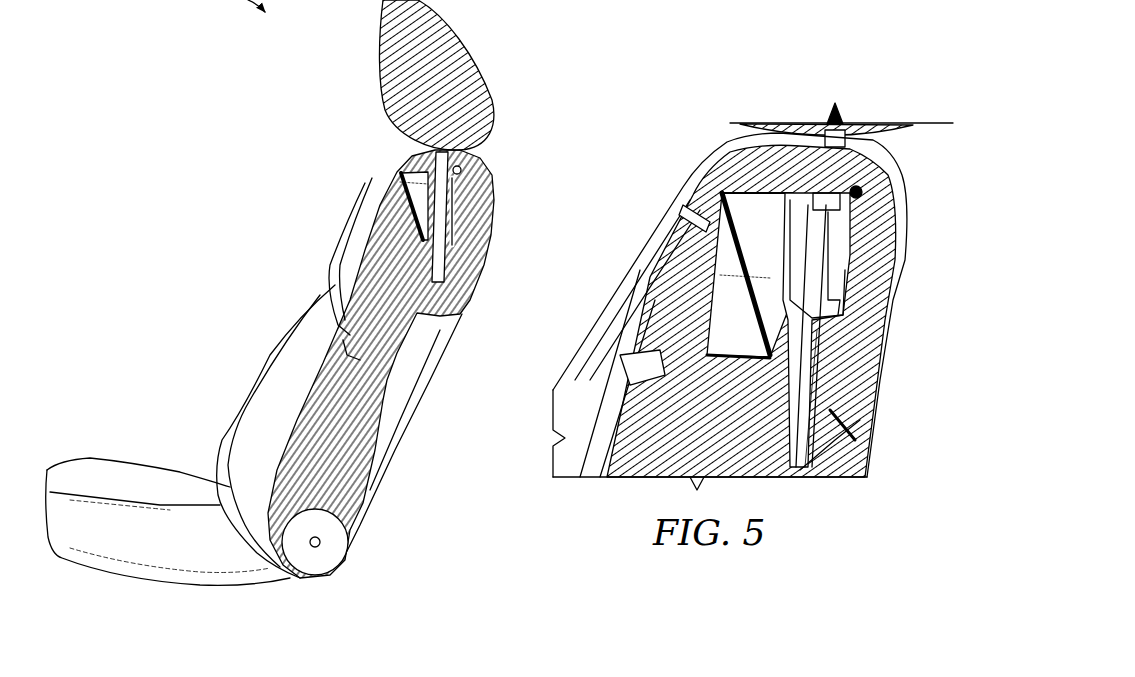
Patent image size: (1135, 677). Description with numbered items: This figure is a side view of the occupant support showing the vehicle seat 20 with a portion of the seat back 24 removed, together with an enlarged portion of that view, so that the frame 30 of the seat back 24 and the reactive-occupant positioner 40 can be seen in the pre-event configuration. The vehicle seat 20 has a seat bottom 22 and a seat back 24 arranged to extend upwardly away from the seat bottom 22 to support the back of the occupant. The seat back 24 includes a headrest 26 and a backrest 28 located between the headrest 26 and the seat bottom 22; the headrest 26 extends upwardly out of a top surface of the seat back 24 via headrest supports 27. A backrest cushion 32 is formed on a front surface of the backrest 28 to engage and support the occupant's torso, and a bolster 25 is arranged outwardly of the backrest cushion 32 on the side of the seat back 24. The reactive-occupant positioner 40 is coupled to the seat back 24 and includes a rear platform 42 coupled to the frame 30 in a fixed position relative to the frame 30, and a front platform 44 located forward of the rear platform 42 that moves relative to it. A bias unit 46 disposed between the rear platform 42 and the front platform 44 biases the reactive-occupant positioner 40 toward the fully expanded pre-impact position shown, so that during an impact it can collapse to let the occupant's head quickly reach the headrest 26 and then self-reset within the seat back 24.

In FIG. 4, the vehicle seat 20 is at (268, 110).
In FIG. 4, the seat bottom 22 is at (70, 480).
In FIG. 4, the seat back 24 is at (470, 276).
In FIG. 5, the seat back 24 is at (900, 282).
In FIG. 4, the bolster 25 is at (240, 404).
In FIG. 4, the headrest 26 is at (483, 68).
In FIG. 5, the headrest 26 is at (908, 136).
In FIG. 4, the headrest support 27 is at (477, 205).
In FIG. 5, the headrest support 27 is at (870, 350).
In FIG. 4, the backrest 28 is at (248, 431).
In FIG. 5, the backrest 28 is at (592, 322).
In FIG. 4, the frame 30 is at (393, 367).
In FIG. 5, the frame 30 is at (845, 447).
In FIG. 4, the backrest cushion 32 is at (328, 255).
In FIG. 4, the reactive-occupant positioner 40 is at (397, 196).
In FIG. 5, the reactive-occupant positioner 40 is at (716, 170).
In FIG. 5, the rear platform 42 is at (870, 206).
In FIG. 5, the front platform 44 is at (660, 236).
In FIG. 5, the bias unit 46 is at (693, 203).